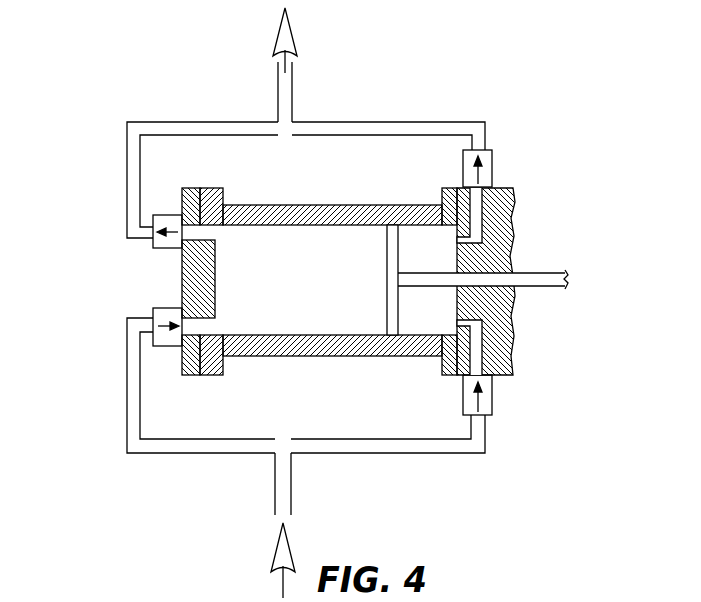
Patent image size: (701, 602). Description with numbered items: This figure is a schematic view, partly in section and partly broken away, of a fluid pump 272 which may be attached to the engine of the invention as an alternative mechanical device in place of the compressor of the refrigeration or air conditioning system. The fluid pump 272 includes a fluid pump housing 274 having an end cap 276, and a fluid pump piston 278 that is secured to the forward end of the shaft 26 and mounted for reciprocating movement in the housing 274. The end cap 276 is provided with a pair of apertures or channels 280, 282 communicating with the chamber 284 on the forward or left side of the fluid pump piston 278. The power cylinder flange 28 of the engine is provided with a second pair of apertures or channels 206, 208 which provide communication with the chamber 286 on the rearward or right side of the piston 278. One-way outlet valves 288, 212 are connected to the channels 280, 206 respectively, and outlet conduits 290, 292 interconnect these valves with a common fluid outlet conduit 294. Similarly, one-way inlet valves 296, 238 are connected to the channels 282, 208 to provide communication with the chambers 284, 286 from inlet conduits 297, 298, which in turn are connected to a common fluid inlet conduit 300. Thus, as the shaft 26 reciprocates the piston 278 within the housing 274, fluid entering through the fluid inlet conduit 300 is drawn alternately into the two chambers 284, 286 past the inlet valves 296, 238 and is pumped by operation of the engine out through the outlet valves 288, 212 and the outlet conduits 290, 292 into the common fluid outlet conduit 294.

The fluid pump 272 is at (452, 98).
The outlet conduit 290 is at (188, 122).
The outlet conduit 292 is at (380, 122).
The common fluid outlet conduit 294 is at (293, 83).
The inlet conduit 297 is at (213, 453).
The inlet conduit 298 is at (452, 457).
The common fluid inlet conduit 300 is at (291, 486).
The one-way outlet valve 288 is at (167, 250).
The one-way inlet valve 296 is at (160, 308).
The one-way outlet valve 212 is at (463, 165).
The one-way inlet valve 238 is at (463, 394).
The channel 280 is at (197, 188).
The channel 282 is at (196, 362).
The fluid pump housing 274 is at (307, 205).
The end cap 276 is at (181, 279).
The power cylinder flange 28 is at (502, 187).
The channel 206 is at (483, 204).
The channel 208 is at (485, 344).
The shaft 26 is at (440, 272).
The fluid pump piston 278 is at (387, 243).
The chamber 284 is at (299, 265).
The chamber 286 is at (449, 315).